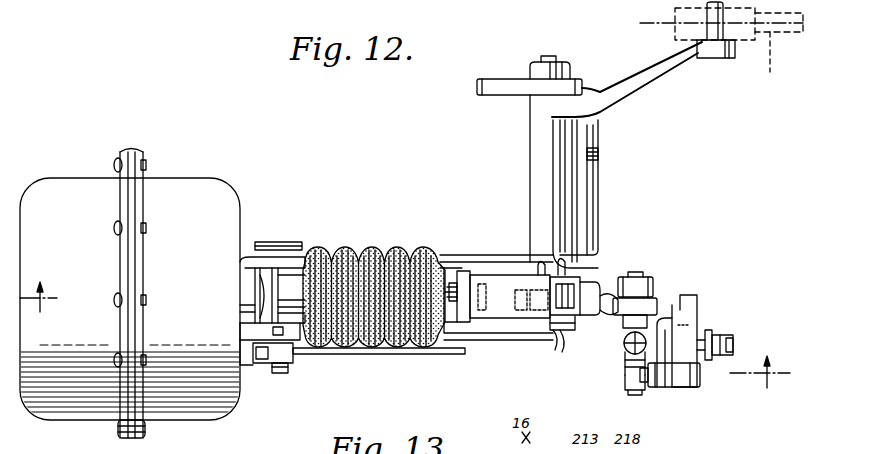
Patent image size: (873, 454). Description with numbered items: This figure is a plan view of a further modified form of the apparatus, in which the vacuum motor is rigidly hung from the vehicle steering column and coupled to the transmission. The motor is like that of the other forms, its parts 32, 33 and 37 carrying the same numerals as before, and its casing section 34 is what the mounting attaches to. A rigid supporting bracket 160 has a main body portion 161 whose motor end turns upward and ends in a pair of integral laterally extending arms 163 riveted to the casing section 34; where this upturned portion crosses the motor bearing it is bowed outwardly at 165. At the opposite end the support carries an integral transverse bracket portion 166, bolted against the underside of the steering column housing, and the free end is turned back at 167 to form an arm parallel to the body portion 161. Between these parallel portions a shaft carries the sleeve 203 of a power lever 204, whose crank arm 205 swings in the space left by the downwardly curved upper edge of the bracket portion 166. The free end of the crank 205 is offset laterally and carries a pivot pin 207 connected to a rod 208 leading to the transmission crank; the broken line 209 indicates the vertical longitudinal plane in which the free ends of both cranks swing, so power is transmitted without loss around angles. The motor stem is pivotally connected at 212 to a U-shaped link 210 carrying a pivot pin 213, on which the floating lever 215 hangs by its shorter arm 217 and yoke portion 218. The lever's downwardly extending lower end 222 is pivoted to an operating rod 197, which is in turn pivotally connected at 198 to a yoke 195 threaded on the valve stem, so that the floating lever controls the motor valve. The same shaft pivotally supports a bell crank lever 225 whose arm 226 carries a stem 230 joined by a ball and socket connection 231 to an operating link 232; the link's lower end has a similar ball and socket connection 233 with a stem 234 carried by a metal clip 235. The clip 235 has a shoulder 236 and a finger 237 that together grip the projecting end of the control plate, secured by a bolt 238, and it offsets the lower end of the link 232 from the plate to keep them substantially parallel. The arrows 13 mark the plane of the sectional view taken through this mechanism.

The section line 13- 13 is at (406, 336).
The strap 32 is at (84, 178).
The tank wall 33 is at (52, 186).
The motor casing section 34 is at (210, 179).
The strap fastener 37 is at (144, 162).
The rigid supporting bracket 160 is at (483, 262).
The main body portion 161 is at (446, 252).
The laterally extending arms 163 is at (241, 285).
The outwardly bowed portion 165 is at (302, 242).
The laterally extending bracket portion 166 is at (597, 190).
The turned-back arm 167 is at (518, 92).
The yoke 195 is at (255, 367).
The operating rod 197 is at (430, 354).
The pivotal connection 198 is at (282, 372).
The power lever sleeve 203 is at (540, 150).
The power lever 204 is at (527, 185).
The crank arm 205 is at (645, 98).
The pivot pin 207 is at (708, 32).
The rod 208 is at (773, 63).
The broken line 209 is at (660, 22).
The link 210 is at (503, 296).
The pivotal connection 212 is at (475, 322).
The pivot pin 213 is at (540, 273).
The floating lever 215 is at (565, 312).
The shorter parallel arm 217 is at (560, 270).
The yoke portion 218 is at (600, 272).
The lower end 222 is at (556, 338).
The bell crank lever 225 is at (658, 320).
The bell crank arm 226 is at (604, 298).
The stem 230 is at (636, 275).
The ball and socket connection 231 is at (626, 367).
The operating link 232 is at (627, 378).
The ball and socket connection 233 is at (637, 385).
The stem 234 is at (692, 380).
The metal clip 235 is at (693, 328).
The shoulder 236 is at (710, 330).
The finger 237 is at (688, 298).
The bolt 238 is at (722, 333).